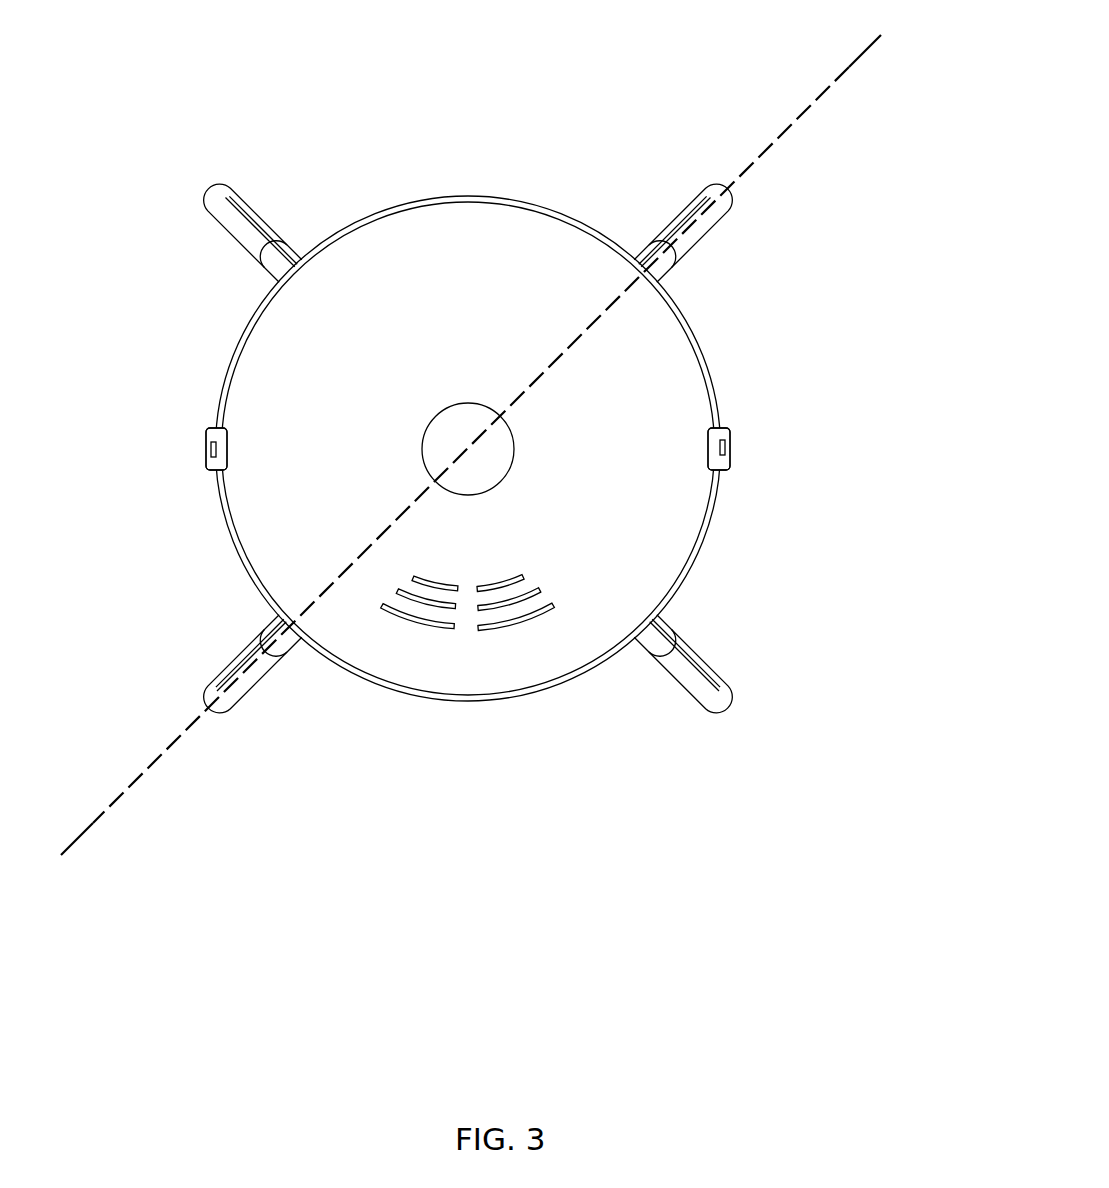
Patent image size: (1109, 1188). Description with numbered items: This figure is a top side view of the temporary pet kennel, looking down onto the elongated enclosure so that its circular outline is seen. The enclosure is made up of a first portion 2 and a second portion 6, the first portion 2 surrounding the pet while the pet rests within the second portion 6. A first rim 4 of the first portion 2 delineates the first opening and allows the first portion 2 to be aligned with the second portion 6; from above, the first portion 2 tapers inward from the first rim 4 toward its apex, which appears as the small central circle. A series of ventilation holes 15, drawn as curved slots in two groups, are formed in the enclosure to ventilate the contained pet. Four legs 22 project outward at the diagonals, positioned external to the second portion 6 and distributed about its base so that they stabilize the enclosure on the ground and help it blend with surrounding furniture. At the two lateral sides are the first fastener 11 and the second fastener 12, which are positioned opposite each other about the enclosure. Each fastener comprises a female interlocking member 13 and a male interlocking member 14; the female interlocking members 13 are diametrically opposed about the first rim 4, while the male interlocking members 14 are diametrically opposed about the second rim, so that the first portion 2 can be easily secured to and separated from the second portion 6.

The first portion 2 is at (487, 212).
The first rim 4 is at (893, 61).
The second portion 6 is at (555, 212).
The first fastener 11 is at (742, 433).
The second fastener 12 is at (196, 433).
The female interlocking member 13 is at (206, 429).
The male interlocking member 14 is at (211, 448).
The ventilation hole 15 is at (414, 577).
The plurality of legs 22 is at (210, 197).